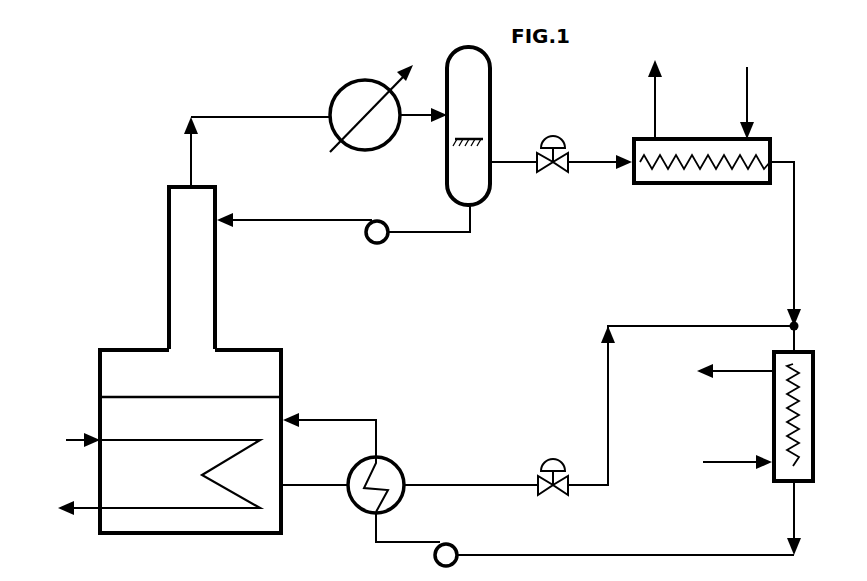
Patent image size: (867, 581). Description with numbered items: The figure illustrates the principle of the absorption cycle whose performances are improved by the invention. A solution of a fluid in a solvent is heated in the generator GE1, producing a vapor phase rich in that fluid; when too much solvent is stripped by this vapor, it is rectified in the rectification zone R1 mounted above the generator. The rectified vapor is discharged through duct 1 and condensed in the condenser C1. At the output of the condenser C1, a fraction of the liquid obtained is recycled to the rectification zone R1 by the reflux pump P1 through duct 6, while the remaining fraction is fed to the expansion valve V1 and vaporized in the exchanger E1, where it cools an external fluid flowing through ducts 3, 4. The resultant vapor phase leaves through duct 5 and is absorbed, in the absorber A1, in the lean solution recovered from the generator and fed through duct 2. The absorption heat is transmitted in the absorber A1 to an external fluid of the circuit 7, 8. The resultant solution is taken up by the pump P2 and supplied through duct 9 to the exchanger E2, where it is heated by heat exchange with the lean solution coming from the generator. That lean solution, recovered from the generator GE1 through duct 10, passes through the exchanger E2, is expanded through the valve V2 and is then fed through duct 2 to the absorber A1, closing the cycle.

The duct 1 is at (236, 117).
The duct 2 is at (660, 326).
The duct 3 is at (747, 100).
The duct 4 is at (655, 100).
The duct 5 is at (794, 247).
The duct 6 is at (295, 223).
The circuit 7 is at (703, 462).
The circuit 8 is at (705, 375).
The duct 9 is at (388, 543).
The duct 10 is at (318, 490).
The condenser C1 is at (351, 83).
The reflux pump P1 is at (379, 221).
The pump P2 is at (448, 544).
The expansion valve V1 is at (561, 146).
The valve V2 is at (486, 469).
The exchanger E1 is at (702, 185).
The exchanger E2 is at (395, 463).
The rectification zone R1 is at (217, 297).
The generator GE1 is at (178, 536).
The absorber A1 is at (772, 408).